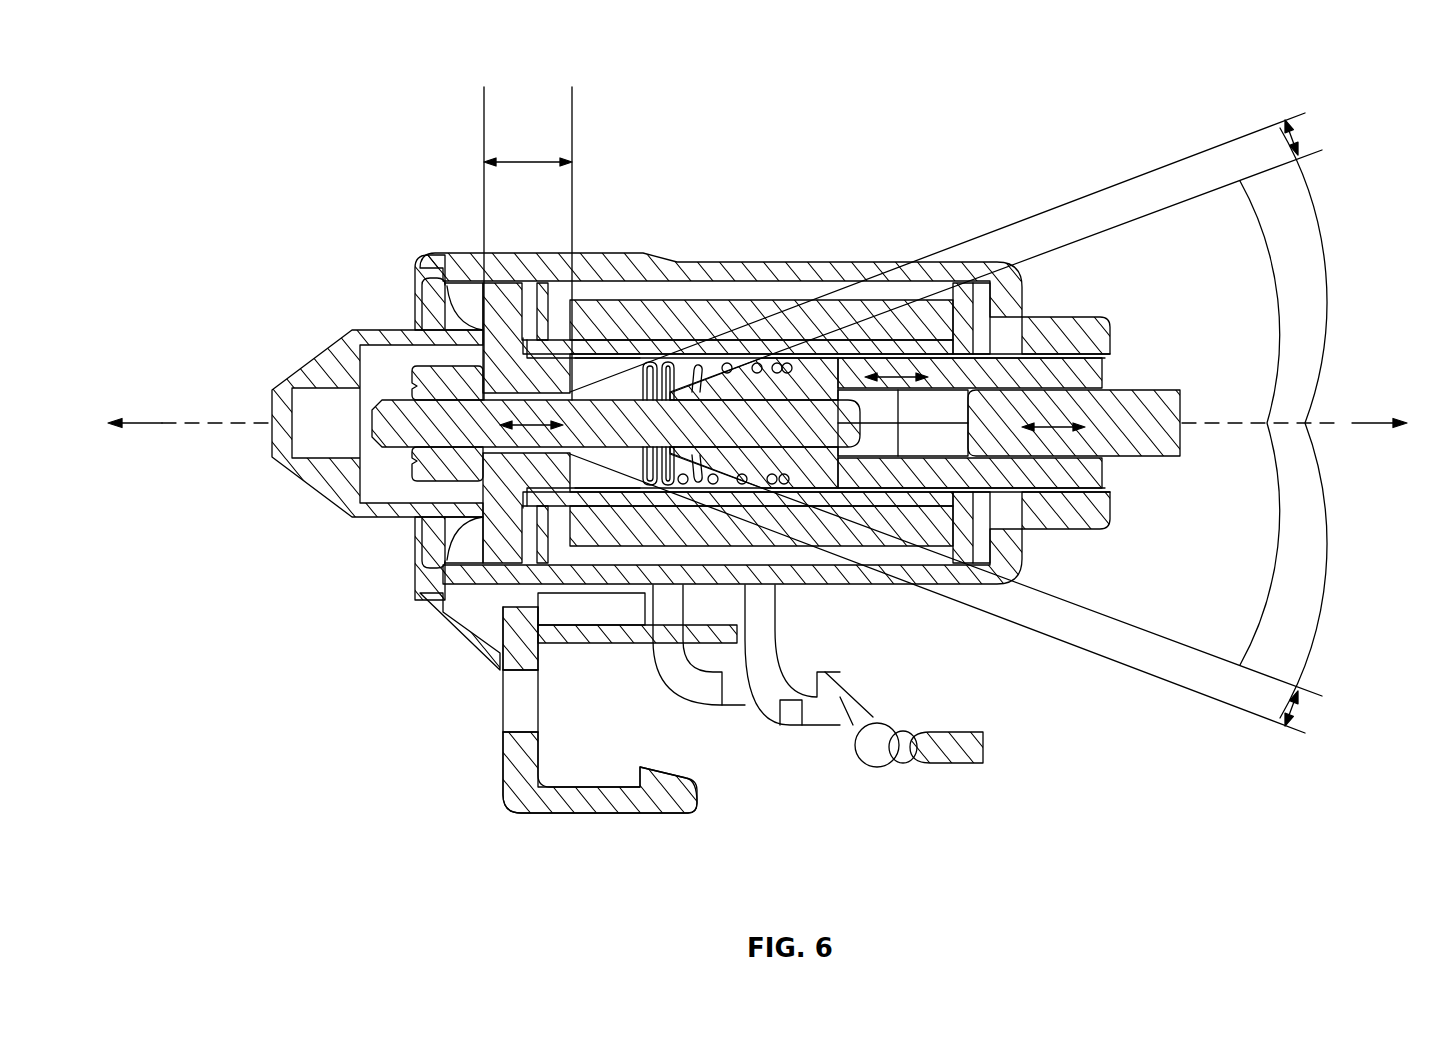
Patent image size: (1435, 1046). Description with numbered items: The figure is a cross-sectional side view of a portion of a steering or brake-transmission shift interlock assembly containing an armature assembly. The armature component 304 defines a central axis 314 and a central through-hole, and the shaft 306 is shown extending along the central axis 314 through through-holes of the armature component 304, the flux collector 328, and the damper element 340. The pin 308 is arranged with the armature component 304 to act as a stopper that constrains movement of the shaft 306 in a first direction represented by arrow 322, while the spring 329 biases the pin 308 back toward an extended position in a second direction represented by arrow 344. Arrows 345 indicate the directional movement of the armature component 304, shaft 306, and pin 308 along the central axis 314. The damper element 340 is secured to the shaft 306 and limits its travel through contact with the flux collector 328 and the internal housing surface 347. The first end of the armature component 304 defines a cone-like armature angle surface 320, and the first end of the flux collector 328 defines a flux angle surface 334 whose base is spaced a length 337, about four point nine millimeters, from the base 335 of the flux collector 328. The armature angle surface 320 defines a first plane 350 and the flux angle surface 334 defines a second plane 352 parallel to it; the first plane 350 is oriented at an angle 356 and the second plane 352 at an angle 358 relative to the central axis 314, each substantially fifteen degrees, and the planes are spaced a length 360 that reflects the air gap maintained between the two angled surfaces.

The armature component 304 is at (813, 375).
The shaft 306 is at (390, 452).
The pin 308 is at (1150, 472).
The central axis 314 is at (197, 422).
The armature angle surface 320 is at (710, 380).
The arrow 322 is at (133, 422).
The flux collector 328 is at (500, 293).
The spring 329 is at (655, 375).
The flux angle surface 334 is at (603, 373).
The base 335 is at (443, 262).
The length 337 is at (518, 158).
The damper element 340 is at (433, 367).
The arrow 344 is at (1373, 422).
The arrows 345 is at (527, 420).
The internal housing surface 347 is at (357, 368).
The first plane 350 is at (1080, 239).
The second plane 352 is at (1112, 185).
The angle 356 is at (1260, 223).
The angle 358 is at (1327, 262).
The length 360 is at (1296, 143).